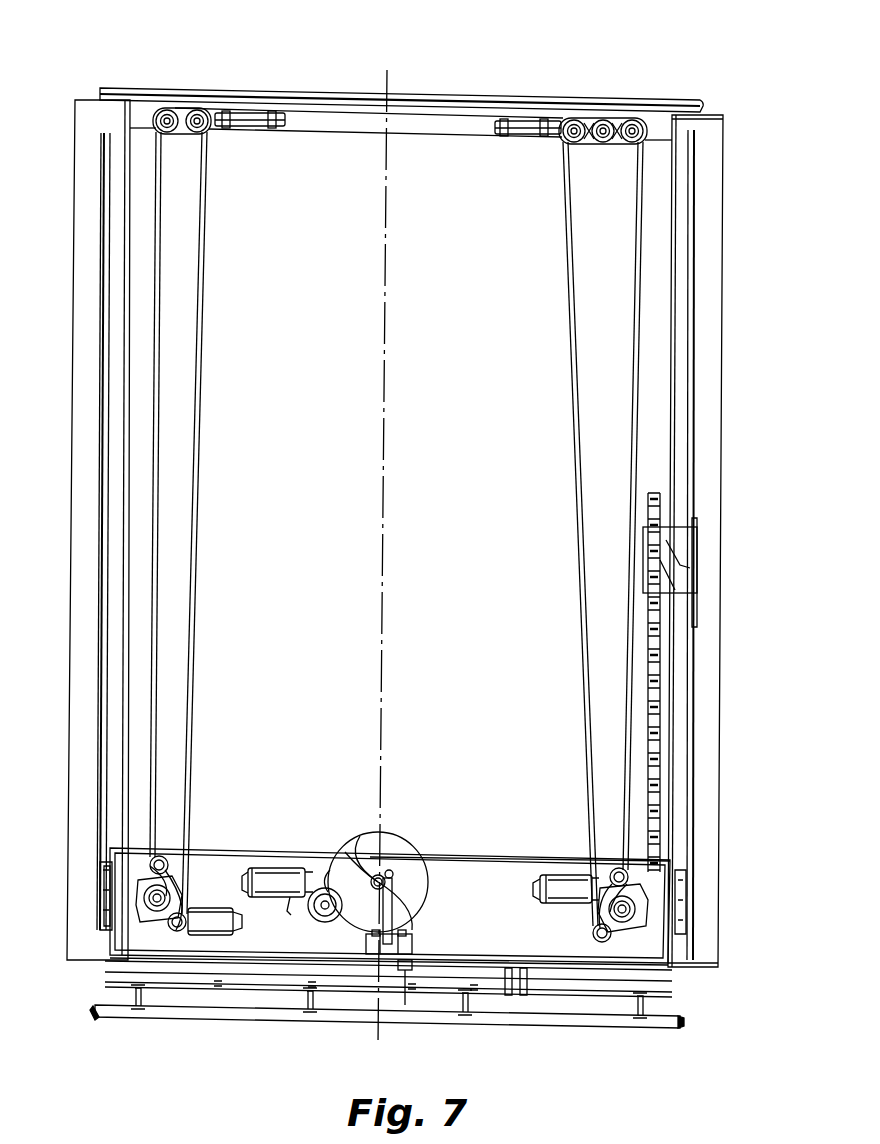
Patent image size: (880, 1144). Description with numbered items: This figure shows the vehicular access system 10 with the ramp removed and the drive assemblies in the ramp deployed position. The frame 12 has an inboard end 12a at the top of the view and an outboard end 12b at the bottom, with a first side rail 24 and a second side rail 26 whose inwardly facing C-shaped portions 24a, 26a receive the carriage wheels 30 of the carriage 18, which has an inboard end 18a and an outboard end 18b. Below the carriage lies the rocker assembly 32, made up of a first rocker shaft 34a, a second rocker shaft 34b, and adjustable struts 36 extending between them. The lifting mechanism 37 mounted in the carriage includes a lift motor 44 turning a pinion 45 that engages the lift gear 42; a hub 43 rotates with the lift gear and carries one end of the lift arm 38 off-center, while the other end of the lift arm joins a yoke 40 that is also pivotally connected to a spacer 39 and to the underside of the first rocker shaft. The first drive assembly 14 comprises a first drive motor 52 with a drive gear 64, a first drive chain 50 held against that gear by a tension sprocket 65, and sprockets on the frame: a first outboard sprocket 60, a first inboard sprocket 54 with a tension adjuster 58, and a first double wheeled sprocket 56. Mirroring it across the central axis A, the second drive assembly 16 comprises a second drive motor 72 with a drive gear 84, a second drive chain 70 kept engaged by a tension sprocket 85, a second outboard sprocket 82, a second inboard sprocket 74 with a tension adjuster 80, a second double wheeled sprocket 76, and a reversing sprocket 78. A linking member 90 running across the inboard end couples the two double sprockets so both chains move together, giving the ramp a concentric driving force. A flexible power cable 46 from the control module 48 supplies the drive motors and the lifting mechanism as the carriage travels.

The vehicular access system 10 is at (105, 58).
The frame 12 is at (68, 375).
The inboard end 12a is at (700, 104).
The outboard end 12b is at (704, 962).
The first drive assembly 14 is at (204, 446).
The second drive assembly 16 is at (568, 402).
The carriage 18 is at (272, 846).
The inboard end 18a is at (484, 856).
The outboard end 18b is at (660, 996).
The first side rail 24 is at (99, 640).
The C-shaped portion 24a is at (108, 293).
The second side rail 26 is at (722, 368).
The C-shaped portion 26a is at (686, 306).
The carriage wheels 30 is at (104, 892).
The rocker assembly 32 is at (360, 1000).
The first rocker shaft 34a is at (284, 990).
The second rocker shaft 34b is at (550, 1022).
The struts 36 is at (138, 1006).
The lifting mechanism 37 is at (430, 926).
The lift arm 38 is at (420, 886).
The spacer 39 is at (414, 942).
The yoke 40 is at (408, 955).
The lift gear 42 is at (395, 840).
The hub 43 is at (356, 852).
The lift motor 44 is at (280, 868).
The pinion 45 is at (318, 920).
The power cable 46 is at (648, 688).
The control module 48 is at (676, 530).
The first drive chain 50 is at (205, 292).
The first drive motor 52 is at (214, 936).
The first inboard sprocket 54 is at (197, 133).
The first double wheeled sprocket 56 is at (166, 109).
The tension adjuster 58 is at (244, 113).
The first outboard sprocket 60 is at (168, 930).
The drive gear 64 is at (170, 892).
The tension sprocket 65 is at (166, 860).
The second drive chain 70 is at (567, 234).
The second drive motor 72 is at (542, 874).
The second inboard sprocket 74 is at (570, 120).
The second double wheeled sprocket 76 is at (605, 120).
The reversing sprocket 78 is at (640, 120).
The tension adjuster 80 is at (514, 122).
The second outboard sprocket 82 is at (593, 936).
The drive gear 84 is at (636, 912).
The tension sprocket 85 is at (616, 868).
The linking member 90 is at (322, 100).
The central axis A is at (392, 86).